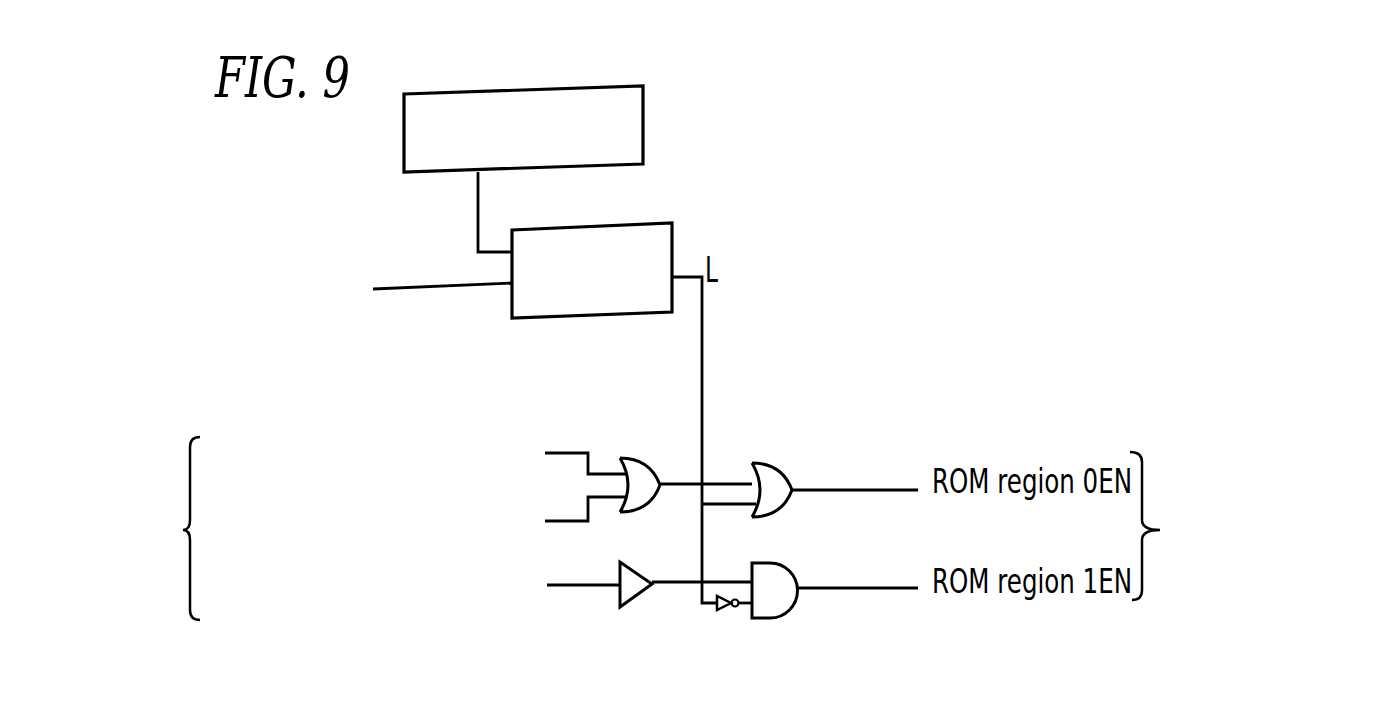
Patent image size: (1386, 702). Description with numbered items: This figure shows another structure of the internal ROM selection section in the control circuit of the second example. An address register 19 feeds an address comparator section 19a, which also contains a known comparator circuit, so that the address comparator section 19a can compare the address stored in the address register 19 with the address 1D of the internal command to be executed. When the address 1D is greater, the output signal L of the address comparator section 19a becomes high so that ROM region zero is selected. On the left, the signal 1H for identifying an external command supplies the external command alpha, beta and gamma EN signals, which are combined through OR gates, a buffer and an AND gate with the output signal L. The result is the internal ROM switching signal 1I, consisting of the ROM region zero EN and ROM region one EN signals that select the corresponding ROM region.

The address register 19 is at (618, 85).
The address comparator section 19a is at (670, 224).
The address 1D is at (434, 270).
The signal for identifying an external command 1H is at (318, 528).
The internal ROM switching signal 1I is at (1253, 541).